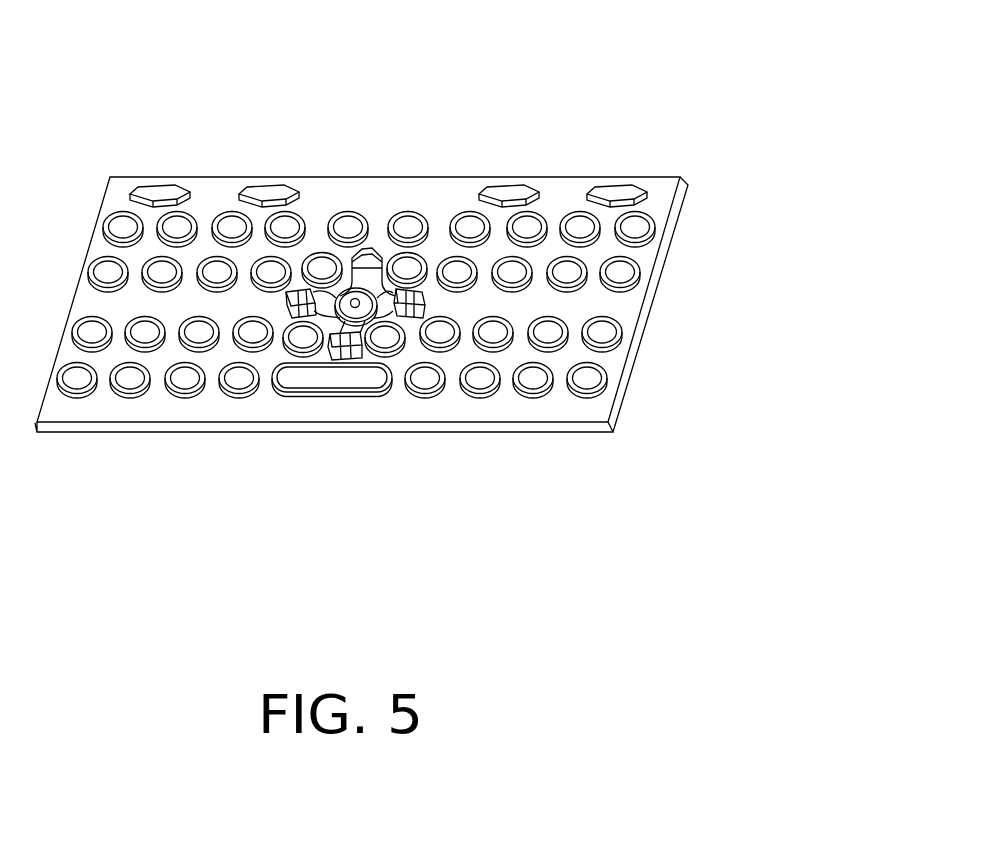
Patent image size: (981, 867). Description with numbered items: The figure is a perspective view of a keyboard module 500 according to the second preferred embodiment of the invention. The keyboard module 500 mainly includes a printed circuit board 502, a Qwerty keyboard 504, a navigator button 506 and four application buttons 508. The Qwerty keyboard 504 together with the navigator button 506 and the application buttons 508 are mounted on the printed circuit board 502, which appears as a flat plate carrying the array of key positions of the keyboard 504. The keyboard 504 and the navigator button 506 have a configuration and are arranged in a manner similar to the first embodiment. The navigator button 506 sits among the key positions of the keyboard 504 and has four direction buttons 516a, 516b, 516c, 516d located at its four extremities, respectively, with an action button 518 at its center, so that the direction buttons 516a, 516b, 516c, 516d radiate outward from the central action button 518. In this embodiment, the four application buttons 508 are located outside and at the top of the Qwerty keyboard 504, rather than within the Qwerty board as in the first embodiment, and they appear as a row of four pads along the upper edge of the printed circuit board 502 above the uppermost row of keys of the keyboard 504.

The keyboard module 500 is at (235, 573).
The printed circuit board 502 is at (635, 366).
The Qwerty keyboard 504 is at (580, 230).
The navigator button 506 is at (390, 317).
The application buttons 508 is at (267, 192).
The direction button 516a is at (370, 247).
The direction button 516b is at (335, 340).
The direction button 516c is at (300, 288).
The direction button 516d is at (395, 330).
The action button 518 is at (380, 325).